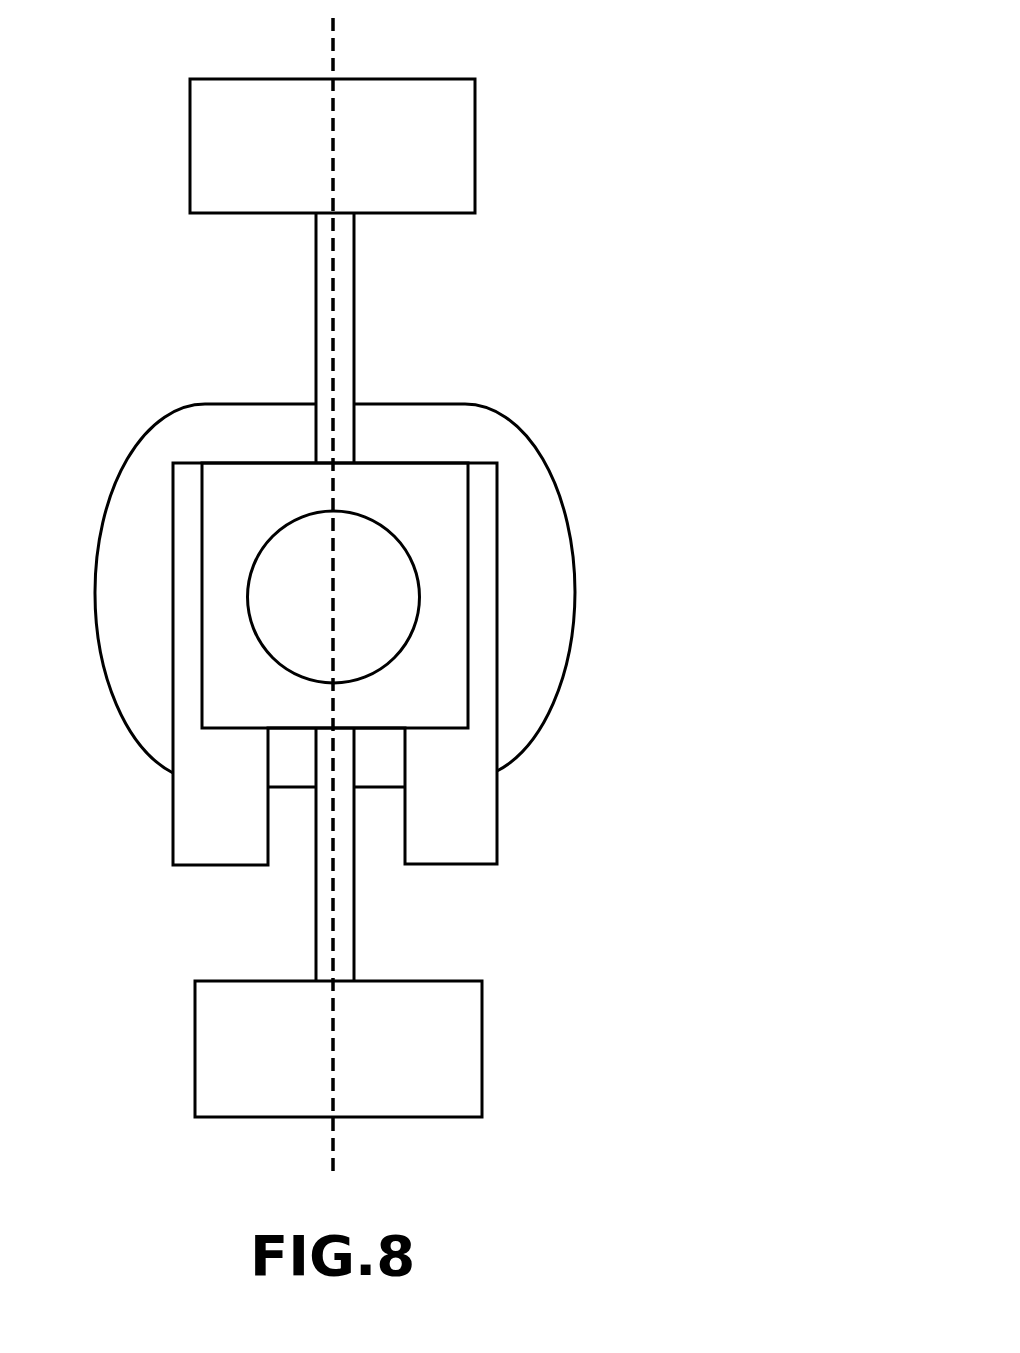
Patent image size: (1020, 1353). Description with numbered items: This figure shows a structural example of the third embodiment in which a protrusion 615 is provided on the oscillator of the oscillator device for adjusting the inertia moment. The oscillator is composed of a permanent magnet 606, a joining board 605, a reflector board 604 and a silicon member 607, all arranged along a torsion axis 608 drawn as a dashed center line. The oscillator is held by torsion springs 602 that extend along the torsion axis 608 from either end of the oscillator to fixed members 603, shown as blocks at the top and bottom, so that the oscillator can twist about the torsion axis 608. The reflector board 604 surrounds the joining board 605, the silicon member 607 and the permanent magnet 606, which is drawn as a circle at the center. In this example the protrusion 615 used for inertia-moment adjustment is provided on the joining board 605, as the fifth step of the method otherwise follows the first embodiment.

The torsion spring 602 is at (356, 352).
The fixed member 603 is at (448, 177).
The reflector board 604 is at (481, 438).
The joining board 605 is at (487, 510).
The permanent magnet 606 is at (390, 585).
The silicon member 607 is at (453, 677).
The torsion axis 608 is at (334, 53).
The protrusion 615 is at (470, 790).